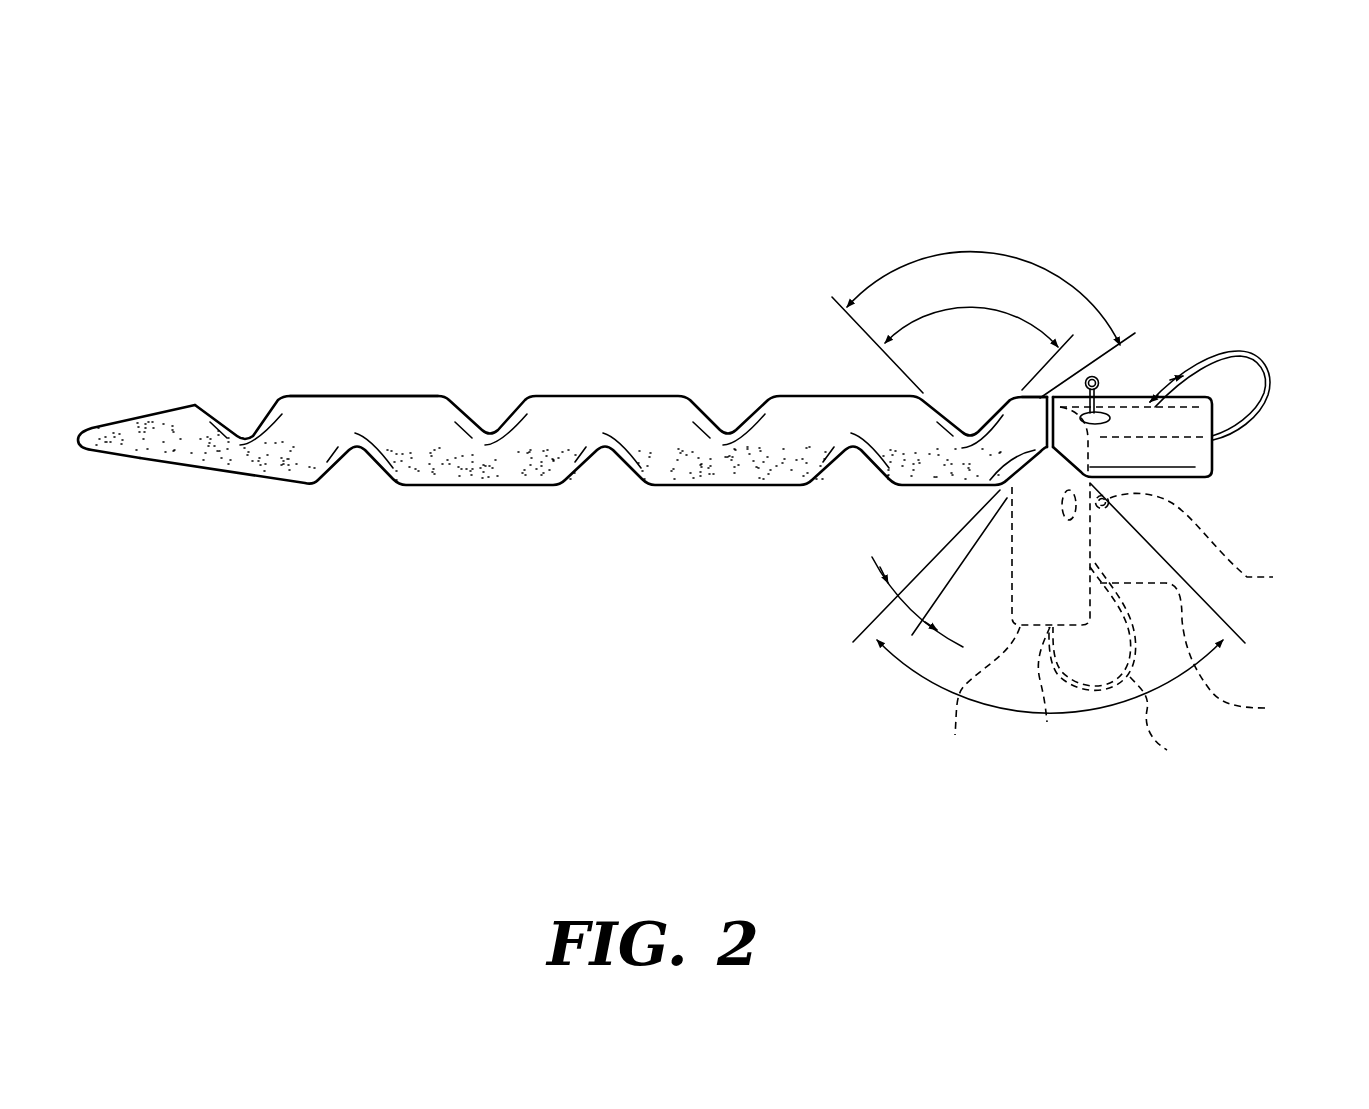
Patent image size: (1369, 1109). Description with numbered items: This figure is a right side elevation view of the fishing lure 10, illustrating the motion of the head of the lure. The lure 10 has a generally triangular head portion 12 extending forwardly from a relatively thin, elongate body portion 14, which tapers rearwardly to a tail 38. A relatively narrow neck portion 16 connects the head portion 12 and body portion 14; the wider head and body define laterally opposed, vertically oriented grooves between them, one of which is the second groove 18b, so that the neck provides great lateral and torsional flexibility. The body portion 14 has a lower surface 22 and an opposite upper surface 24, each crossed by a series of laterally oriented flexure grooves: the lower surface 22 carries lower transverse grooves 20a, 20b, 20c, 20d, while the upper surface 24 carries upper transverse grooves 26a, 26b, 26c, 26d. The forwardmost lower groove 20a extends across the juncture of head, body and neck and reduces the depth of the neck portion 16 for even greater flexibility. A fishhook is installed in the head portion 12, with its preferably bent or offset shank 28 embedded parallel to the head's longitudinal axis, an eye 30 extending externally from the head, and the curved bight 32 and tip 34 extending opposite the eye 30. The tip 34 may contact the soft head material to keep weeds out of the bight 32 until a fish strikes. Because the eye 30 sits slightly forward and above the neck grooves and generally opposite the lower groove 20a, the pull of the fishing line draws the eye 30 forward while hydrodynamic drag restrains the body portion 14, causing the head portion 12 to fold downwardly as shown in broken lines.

The fishing lure 10 is at (264, 165).
The head portion 12 is at (1195, 478).
The body portion 14 is at (608, 397).
The neck portion 16 is at (1010, 397).
The second groove 18b is at (1052, 450).
The first lower transverse groove 20a is at (1000, 488).
The lower transverse groove 20b is at (847, 480).
The lower transverse groove 20c is at (602, 478).
The lower transverse groove 20d is at (358, 478).
The lower surface 22 is at (443, 487).
The upper surface 24 is at (353, 403).
The upper transverse groove 26a is at (977, 397).
The upper transverse groove 26b is at (735, 412).
The upper transverse groove 26c is at (485, 412).
The upper transverse groove 26d is at (242, 412).
The hook shank 28 is at (1247, 437).
The hook eye 30 is at (1153, 397).
The hook bight 32 is at (1247, 352).
The hook tip 34 is at (1157, 395).
The tail 38 is at (142, 458).